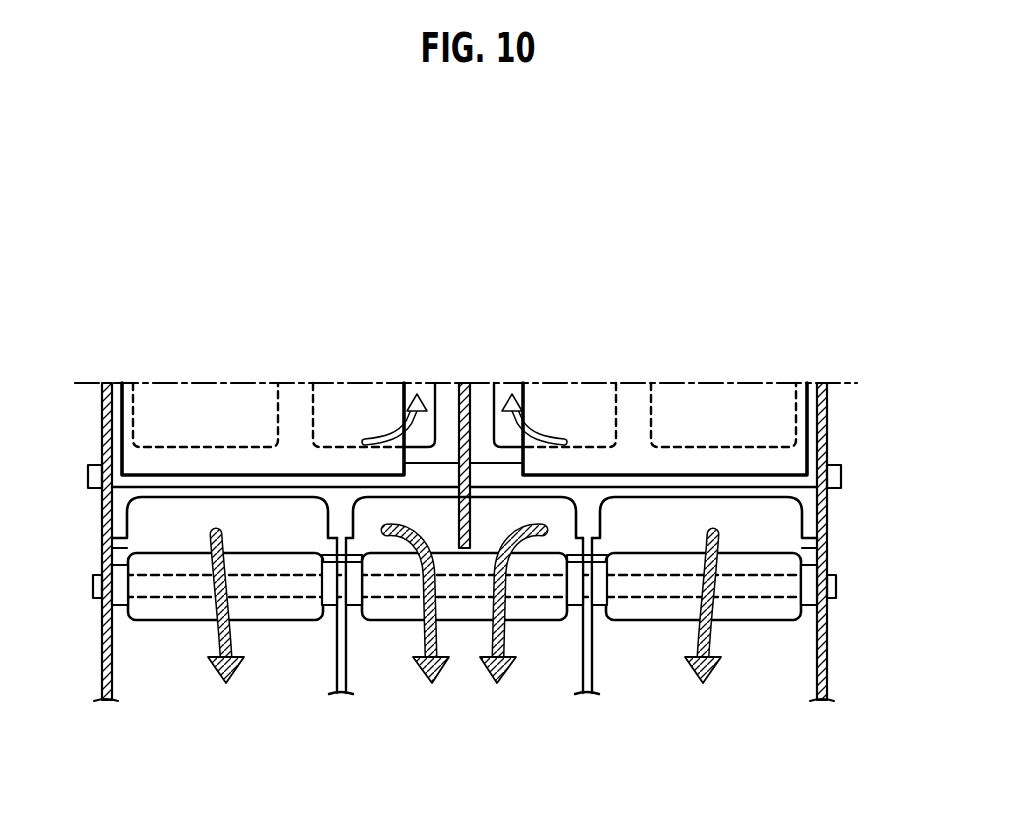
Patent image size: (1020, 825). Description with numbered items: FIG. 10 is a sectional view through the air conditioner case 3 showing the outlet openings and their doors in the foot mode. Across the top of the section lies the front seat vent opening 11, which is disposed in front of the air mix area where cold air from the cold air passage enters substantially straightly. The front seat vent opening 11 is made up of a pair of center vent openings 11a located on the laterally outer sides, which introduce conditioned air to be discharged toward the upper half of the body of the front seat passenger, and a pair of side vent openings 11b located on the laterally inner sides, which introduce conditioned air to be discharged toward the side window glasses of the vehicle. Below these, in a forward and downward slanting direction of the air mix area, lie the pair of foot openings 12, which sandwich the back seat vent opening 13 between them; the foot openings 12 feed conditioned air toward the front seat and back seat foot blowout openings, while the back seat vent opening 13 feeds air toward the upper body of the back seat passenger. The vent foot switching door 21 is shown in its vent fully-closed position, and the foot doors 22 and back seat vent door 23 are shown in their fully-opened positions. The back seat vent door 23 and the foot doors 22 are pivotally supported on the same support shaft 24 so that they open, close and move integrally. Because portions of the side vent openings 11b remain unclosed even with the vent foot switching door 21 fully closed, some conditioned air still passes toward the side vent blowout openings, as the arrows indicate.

The air conditioner case 3 is at (102, 401).
The front seat vent opening 11 is at (287, 272).
The center vent opening 11a is at (278, 383).
The side vent opening 11b is at (427, 383).
The foot opening 12 is at (297, 643).
The back seat vent opening 13 is at (387, 643).
The vent foot switching door 21 is at (180, 463).
The foot door 22 is at (155, 613).
The back seat vent door 23 is at (473, 613).
The support shaft 24 is at (836, 581).